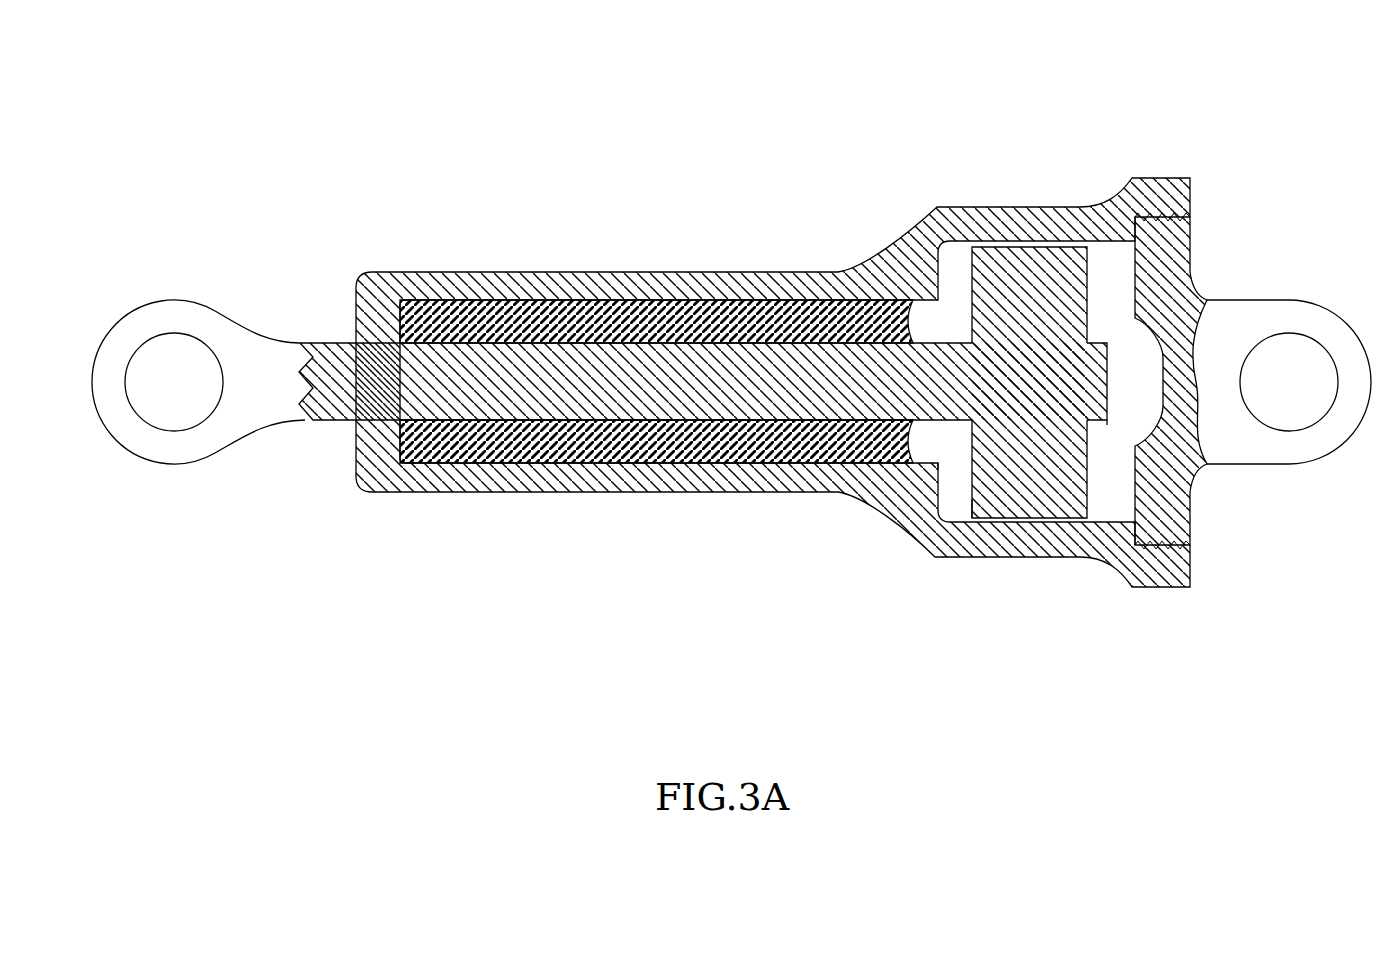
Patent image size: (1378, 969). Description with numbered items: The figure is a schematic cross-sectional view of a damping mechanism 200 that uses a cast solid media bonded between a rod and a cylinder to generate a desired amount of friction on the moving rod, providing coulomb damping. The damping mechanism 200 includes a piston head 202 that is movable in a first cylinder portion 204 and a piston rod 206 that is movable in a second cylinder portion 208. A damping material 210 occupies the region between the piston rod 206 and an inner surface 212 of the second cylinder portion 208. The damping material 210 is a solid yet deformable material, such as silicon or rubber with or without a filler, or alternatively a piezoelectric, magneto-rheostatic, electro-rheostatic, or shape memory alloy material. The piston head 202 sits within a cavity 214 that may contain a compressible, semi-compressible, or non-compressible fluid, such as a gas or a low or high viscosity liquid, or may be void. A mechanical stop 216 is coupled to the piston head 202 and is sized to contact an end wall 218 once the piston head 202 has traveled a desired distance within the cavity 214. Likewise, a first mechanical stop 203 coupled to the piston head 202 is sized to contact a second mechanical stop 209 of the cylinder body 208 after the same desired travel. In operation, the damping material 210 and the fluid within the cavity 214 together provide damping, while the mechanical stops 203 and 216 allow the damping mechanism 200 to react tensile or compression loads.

The damping mechanism 200 is at (462, 126).
The piston head 202 is at (1088, 277).
The first mechanical stop 203 is at (966, 500).
The first cylinder portion 204 is at (988, 206).
The piston rod 206 is at (340, 340).
The second cylinder portion 208 is at (540, 272).
The second mechanical stop 209 is at (942, 482).
The damping material 210 is at (672, 320).
The inner surface 212 is at (462, 456).
The cavity 214 is at (1112, 490).
The mechanical stop 216 is at (1140, 332).
The end wall 218 is at (1192, 506).